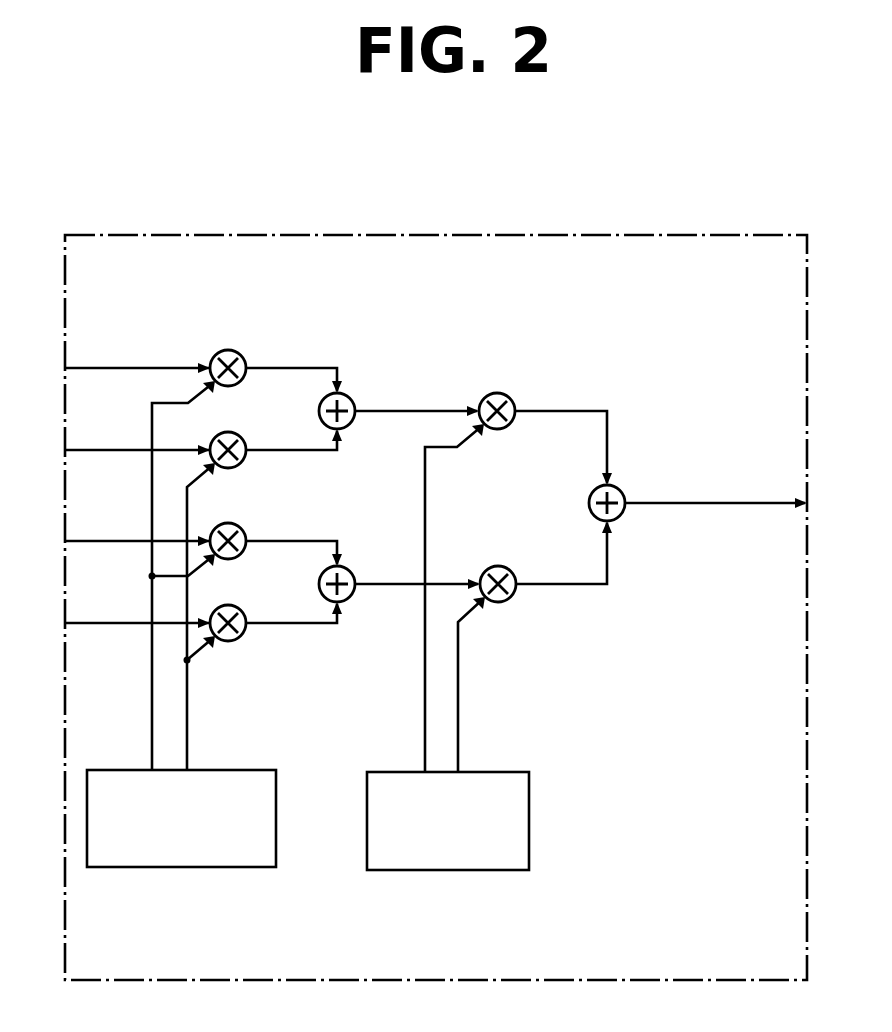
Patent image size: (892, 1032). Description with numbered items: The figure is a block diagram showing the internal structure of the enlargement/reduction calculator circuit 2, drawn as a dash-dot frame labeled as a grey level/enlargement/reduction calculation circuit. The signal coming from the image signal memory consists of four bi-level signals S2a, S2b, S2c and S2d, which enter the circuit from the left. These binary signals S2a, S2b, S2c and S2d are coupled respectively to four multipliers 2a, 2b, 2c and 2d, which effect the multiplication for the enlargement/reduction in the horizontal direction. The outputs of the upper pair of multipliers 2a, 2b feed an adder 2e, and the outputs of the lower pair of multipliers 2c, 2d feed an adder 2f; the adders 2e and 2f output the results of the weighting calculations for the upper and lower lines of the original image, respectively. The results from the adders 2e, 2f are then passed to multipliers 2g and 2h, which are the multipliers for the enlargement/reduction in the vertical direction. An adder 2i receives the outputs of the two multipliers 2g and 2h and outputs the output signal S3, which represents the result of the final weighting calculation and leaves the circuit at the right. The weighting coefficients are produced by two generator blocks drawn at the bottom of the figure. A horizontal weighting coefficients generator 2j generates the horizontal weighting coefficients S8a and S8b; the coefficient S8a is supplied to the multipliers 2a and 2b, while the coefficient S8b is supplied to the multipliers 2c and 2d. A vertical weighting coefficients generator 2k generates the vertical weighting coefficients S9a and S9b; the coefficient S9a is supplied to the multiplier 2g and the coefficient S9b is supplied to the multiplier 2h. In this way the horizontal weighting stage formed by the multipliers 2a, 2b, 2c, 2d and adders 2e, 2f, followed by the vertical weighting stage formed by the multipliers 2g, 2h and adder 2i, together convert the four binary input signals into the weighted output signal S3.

The enlargement/reduction calculator circuit 2 is at (623, 235).
The multiplier 2a is at (242, 357).
The multiplier 2b is at (242, 439).
The multiplier 2c is at (242, 530).
The multiplier 2d is at (242, 612).
The adder 2e is at (350, 398).
The adder 2f is at (351, 571).
The multiplier 2g is at (510, 398).
The multiplier 2h is at (511, 571).
The adder 2i is at (620, 490).
The horizontal weighting coefficients generator 2j is at (190, 867).
The vertical weighting coefficients generator 2k is at (465, 870).
The bi-level signal S2a is at (148, 368).
The bi-level signal S2b is at (148, 450).
The bi-level signal S2c is at (148, 541).
The bi-level signal S2d is at (148, 623).
The output signal S3 is at (728, 503).
The horizontal weighting coefficient S8a is at (152, 713).
The horizontal weighting coefficient S8b is at (228, 616).
The vertical weighting coefficient S9a is at (425, 727).
The vertical weighting coefficient S9b is at (458, 728).